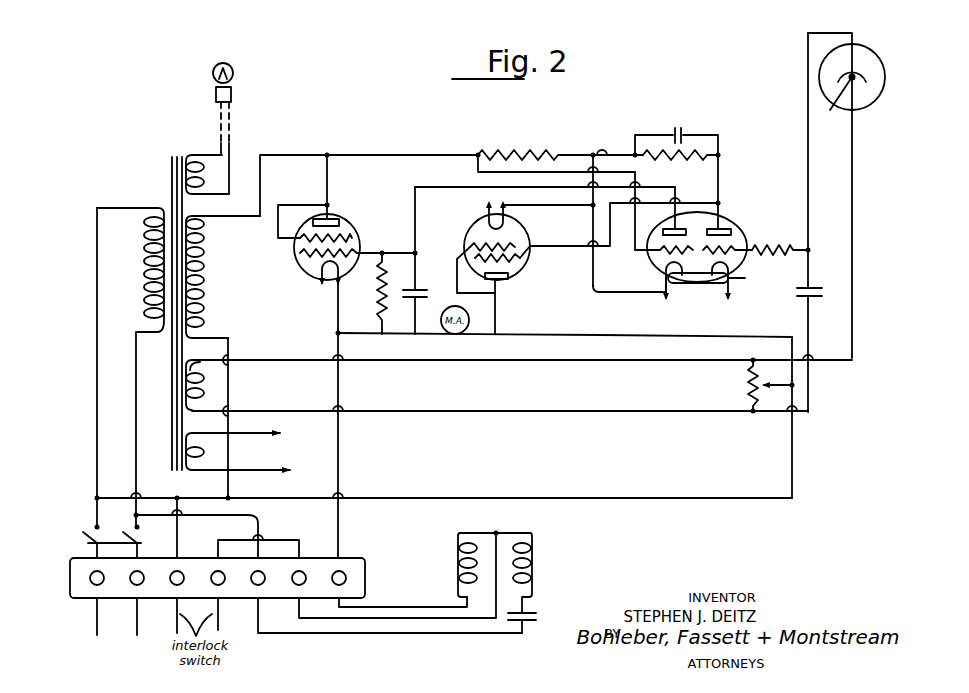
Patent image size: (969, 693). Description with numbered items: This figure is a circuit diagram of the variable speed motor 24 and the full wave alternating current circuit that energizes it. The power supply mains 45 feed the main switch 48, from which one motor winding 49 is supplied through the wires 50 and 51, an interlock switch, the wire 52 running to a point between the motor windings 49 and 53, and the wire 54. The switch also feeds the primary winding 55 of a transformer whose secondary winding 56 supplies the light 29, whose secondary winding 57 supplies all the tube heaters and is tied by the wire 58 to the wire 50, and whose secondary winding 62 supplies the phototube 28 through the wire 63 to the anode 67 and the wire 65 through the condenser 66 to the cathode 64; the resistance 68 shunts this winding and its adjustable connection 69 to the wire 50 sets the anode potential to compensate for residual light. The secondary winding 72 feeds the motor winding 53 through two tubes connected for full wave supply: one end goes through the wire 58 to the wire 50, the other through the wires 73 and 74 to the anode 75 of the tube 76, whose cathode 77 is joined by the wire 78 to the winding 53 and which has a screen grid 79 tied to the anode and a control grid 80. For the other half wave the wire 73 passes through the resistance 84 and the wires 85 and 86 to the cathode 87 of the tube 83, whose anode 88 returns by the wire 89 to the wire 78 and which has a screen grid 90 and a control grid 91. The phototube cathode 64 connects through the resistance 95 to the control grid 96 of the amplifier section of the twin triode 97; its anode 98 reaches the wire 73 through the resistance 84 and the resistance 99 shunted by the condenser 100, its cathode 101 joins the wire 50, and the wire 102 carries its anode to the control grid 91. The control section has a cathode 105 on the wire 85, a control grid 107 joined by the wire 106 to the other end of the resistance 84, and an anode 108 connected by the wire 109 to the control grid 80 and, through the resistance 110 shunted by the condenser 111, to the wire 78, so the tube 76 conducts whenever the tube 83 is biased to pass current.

The variable speed motor 24 is at (503, 524).
The phototube 28 is at (866, 109).
The light 29 is at (234, 77).
The power supply mains 45 is at (99, 603).
The main switch 48 is at (86, 535).
The motor winding 49 is at (534, 560).
The wire 50 is at (763, 337).
The wire 51 is at (178, 542).
The wire 52 is at (282, 540).
The motor winding 53 is at (456, 560).
The wire 54 is at (250, 516).
The primary winding 55 is at (146, 276).
The secondary winding 56 is at (192, 155).
The heater secondary winding 57 is at (191, 472).
The wire 58 is at (229, 380).
The secondary winding 62 is at (206, 355).
The wire 63 is at (515, 362).
The cathode 64 is at (860, 63).
The wire 65 is at (585, 410).
The condenser 66 is at (815, 298).
The anode 67 is at (835, 107).
The resistance 68 is at (749, 386).
The adjustable connection 69 is at (778, 396).
The secondary winding 72 is at (206, 290).
The wire 73 is at (291, 155).
The wire 74 is at (328, 181).
The anode 75 is at (339, 221).
The electron discharge tube 76 is at (354, 232).
The cathode 77 is at (317, 279).
The wire 78 is at (336, 330).
The screen grid 79 is at (300, 240).
The control grid 80 is at (300, 256).
The electron discharge tube 83 is at (471, 222).
The resistance 84 is at (540, 152).
The wire 85 is at (595, 152).
The wire 86 is at (579, 206).
The cathode 87 is at (510, 210).
The anode 88 is at (500, 280).
The wire 89 is at (508, 333).
The screen grid 90 is at (470, 248).
The control grid 91 is at (522, 257).
The resistance 95 is at (781, 260).
The control grid 96 is at (736, 248).
The twin triode 97 is at (735, 226).
The anode 98 is at (734, 218).
The resistance 99 is at (710, 161).
The condenser 100 is at (684, 132).
The cathode 101 is at (746, 279).
The wire 102 is at (578, 248).
The cathode 105 is at (658, 280).
The wire 106 is at (478, 170).
The control grid 107 is at (660, 252).
The anode 108 is at (668, 229).
The wire 109 is at (414, 190).
The resistance 110 is at (380, 297).
The condenser 111 is at (418, 290).